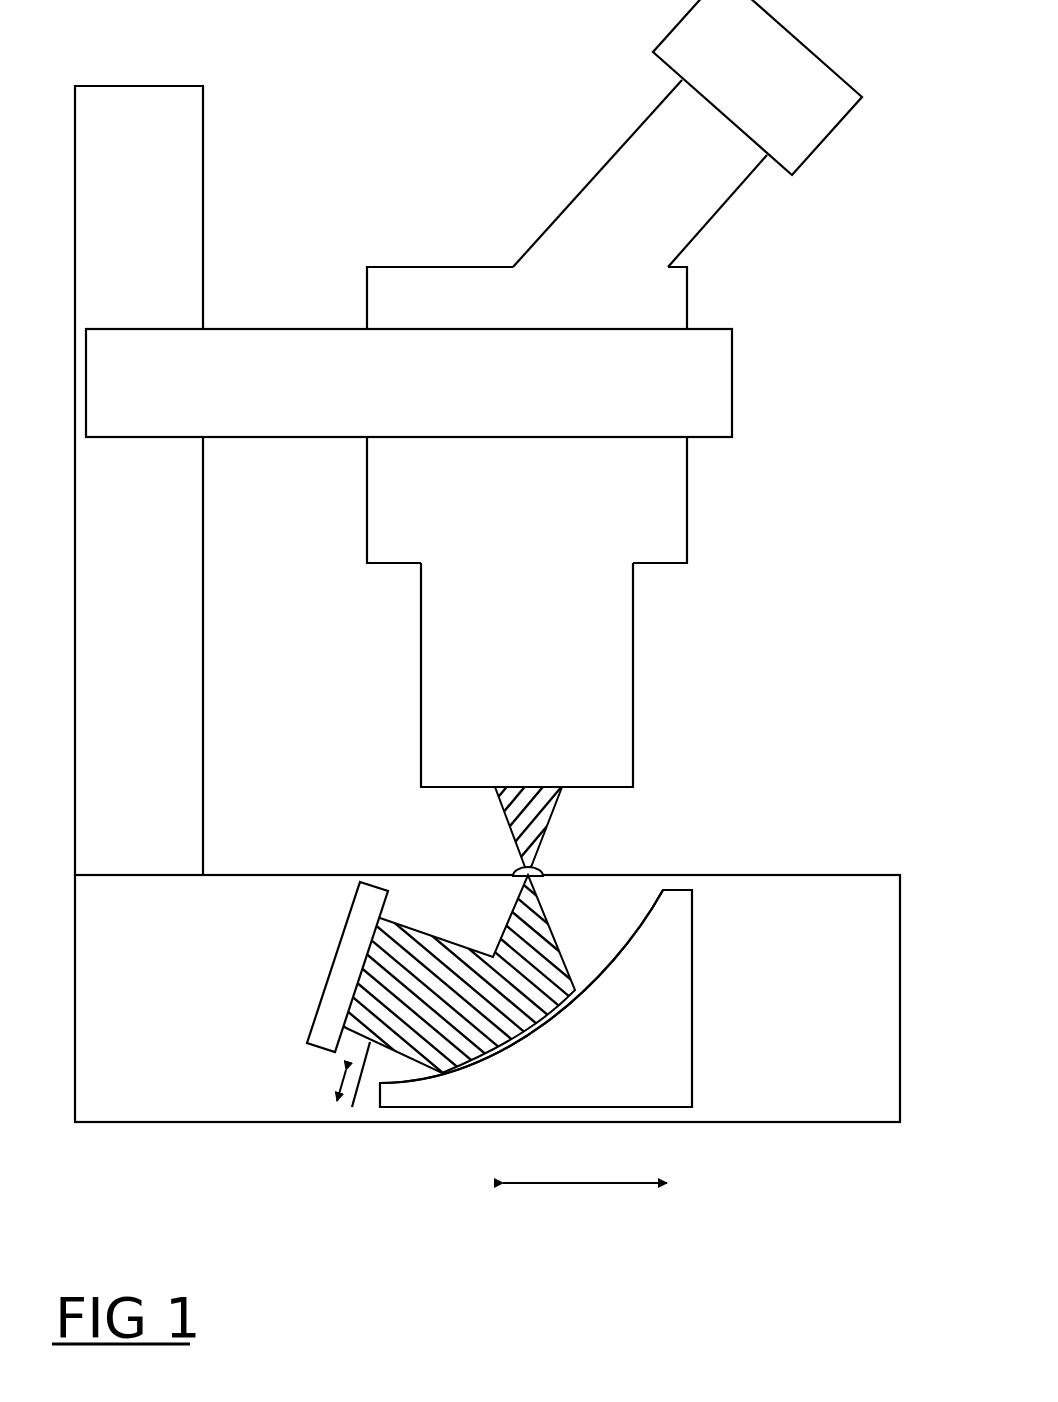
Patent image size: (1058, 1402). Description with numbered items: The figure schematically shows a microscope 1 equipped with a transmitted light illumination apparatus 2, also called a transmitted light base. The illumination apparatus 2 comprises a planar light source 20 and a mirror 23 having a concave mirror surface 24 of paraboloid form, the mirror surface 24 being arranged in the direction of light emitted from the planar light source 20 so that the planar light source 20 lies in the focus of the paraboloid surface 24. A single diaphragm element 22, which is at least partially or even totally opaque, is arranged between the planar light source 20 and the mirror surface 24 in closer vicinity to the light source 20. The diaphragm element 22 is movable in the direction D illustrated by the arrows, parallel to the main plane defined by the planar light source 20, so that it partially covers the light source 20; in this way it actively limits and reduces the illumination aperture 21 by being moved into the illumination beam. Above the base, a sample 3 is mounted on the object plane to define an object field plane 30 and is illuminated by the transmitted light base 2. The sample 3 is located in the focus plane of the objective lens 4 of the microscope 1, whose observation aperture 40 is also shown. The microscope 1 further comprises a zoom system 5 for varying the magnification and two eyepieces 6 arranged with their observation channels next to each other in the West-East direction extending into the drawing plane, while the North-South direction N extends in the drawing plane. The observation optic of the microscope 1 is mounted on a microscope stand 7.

The microscope 1 is at (462, 118).
The transmitted light illumination apparatus 2 is at (770, 875).
The sample 3 is at (543, 875).
The objective lens 4 is at (634, 588).
The zoom system 5 is at (688, 478).
The eyepieces 6 is at (817, 53).
The microscope stand 7 is at (185, 582).
The planar light source 20 is at (320, 988).
The illumination aperture 21 is at (400, 920).
The diaphragm element 22 is at (358, 1087).
The mirror 23 is at (673, 1027).
The concave mirror surface 24 is at (605, 960).
The object field plane 30 is at (565, 875).
The observation aperture 40 is at (500, 818).
The direction of movement of the diaphragm element D is at (330, 1087).
The North direction N is at (582, 1182).